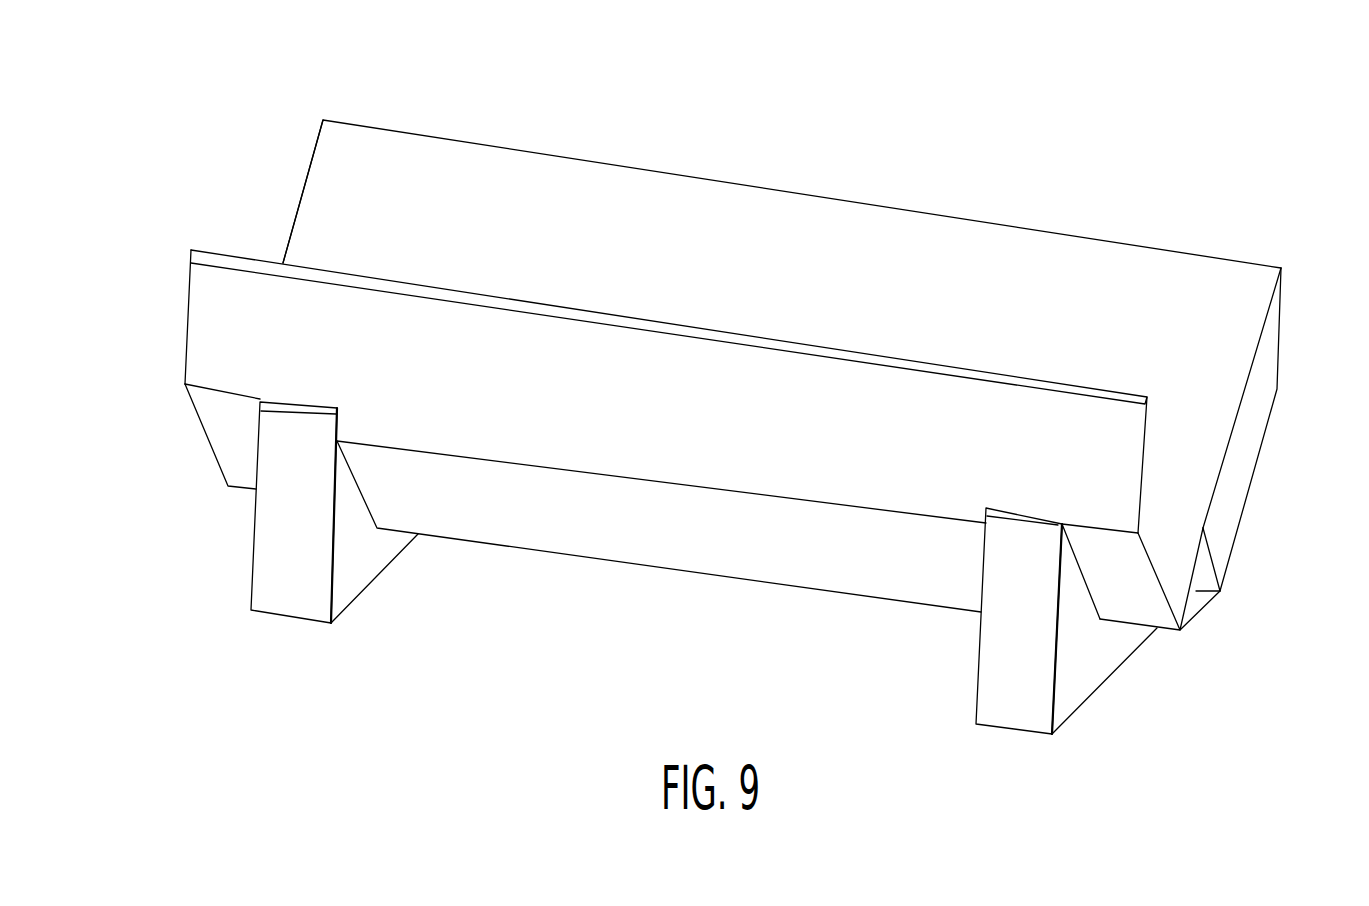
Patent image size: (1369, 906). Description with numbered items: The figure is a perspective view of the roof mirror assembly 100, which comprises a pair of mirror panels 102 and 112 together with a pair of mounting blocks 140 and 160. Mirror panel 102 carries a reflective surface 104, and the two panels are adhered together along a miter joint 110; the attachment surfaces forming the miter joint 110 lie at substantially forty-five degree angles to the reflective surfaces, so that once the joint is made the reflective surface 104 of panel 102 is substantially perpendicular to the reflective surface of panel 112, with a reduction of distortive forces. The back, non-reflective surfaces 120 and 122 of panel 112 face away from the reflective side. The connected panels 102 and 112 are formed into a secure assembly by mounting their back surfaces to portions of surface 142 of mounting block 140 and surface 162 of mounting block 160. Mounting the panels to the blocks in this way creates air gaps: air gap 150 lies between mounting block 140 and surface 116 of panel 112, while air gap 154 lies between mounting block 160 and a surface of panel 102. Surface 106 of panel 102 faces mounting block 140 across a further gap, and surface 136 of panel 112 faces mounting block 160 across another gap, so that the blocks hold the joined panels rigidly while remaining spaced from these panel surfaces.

The roof mirror assembly 100 is at (538, 91).
The mirror panel 102 is at (312, 151).
The reflective surface 104 is at (871, 255).
The surface 106 is at (1247, 510).
The miter joint 110 is at (1204, 543).
The mirror panel 112 is at (185, 333).
The surface 116 is at (1128, 610).
The back, non-reflective surface 120 is at (558, 527).
The back, non-reflective surface 122 is at (698, 457).
The surface 136 is at (242, 457).
The mounting block 140 is at (1087, 667).
The surface 142 is at (975, 692).
The air gap 150 is at (1032, 517).
The air gap 154 is at (296, 403).
The mounting block 160 is at (355, 570).
The surface 162 is at (392, 538).